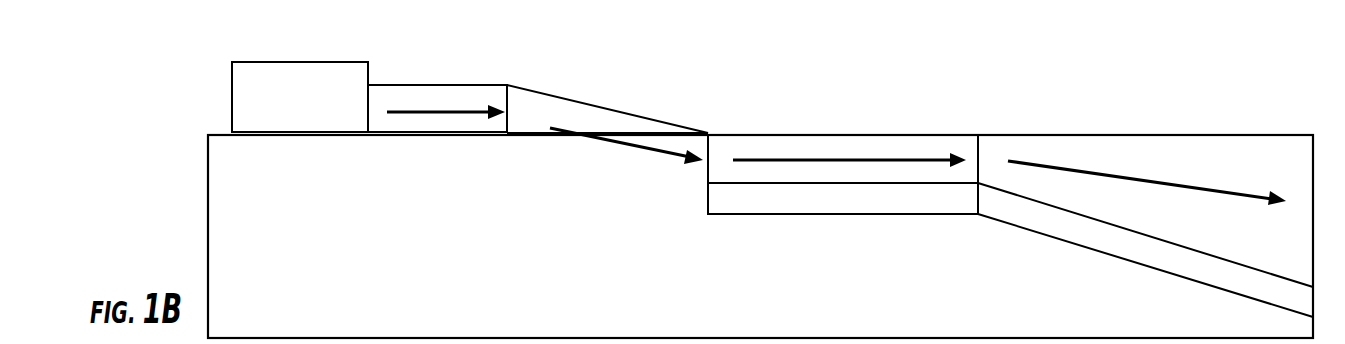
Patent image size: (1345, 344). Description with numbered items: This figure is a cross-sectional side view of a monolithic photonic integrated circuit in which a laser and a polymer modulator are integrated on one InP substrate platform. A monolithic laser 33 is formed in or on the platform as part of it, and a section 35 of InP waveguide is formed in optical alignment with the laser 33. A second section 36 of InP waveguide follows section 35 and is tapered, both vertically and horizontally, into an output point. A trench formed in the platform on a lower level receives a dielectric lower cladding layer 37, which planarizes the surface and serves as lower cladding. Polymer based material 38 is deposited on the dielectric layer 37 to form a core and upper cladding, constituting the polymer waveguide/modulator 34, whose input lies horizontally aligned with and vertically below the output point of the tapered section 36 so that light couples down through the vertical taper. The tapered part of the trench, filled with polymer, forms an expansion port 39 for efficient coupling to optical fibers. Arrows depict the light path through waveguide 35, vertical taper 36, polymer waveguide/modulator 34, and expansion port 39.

The monolithic laser 33 is at (249, 120).
The polymer waveguide/modulator 34 is at (886, 70).
The section of InP waveguide 35 is at (430, 118).
The second section of InP waveguide 36 is at (514, 110).
The dielectric lower cladding layer 37 is at (963, 195).
The polymer based material 38 is at (718, 148).
The expansion port 39 is at (1253, 150).